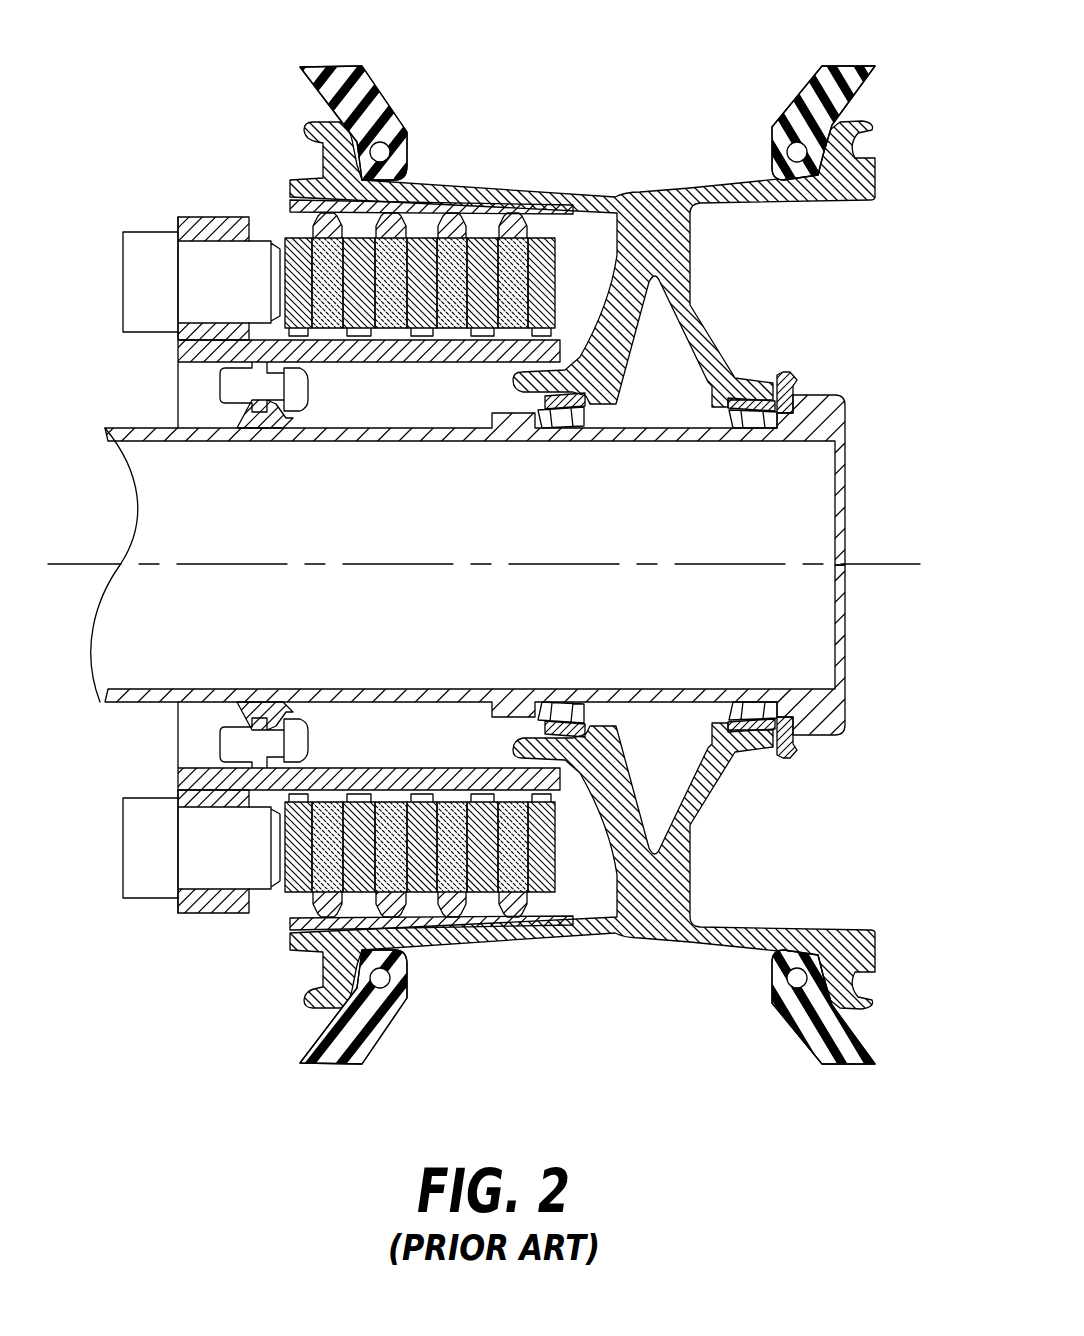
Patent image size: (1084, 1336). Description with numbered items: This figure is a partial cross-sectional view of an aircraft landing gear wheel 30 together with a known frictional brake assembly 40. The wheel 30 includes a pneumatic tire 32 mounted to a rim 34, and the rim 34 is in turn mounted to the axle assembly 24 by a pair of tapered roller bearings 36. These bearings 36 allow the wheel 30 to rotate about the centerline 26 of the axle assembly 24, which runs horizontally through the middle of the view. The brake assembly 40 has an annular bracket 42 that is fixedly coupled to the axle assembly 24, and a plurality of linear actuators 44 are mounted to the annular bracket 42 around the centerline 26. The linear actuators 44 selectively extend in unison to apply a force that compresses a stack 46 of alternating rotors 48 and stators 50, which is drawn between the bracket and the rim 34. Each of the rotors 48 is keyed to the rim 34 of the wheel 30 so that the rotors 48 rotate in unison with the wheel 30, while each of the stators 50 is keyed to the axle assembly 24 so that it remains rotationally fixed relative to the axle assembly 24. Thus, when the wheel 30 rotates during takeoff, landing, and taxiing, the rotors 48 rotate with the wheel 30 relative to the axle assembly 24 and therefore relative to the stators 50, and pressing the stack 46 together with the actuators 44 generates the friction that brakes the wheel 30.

The axle assembly 24 is at (130, 702).
The centerline 26 is at (875, 564).
The wheel 30 is at (915, 62).
The pneumatic tire 32 is at (866, 93).
The rim 34 is at (712, 322).
The tapered roller bearings 36 is at (787, 387).
The brake assembly 40 is at (123, 206).
The annular bracket 42 is at (187, 345).
The linear actuators 44 is at (203, 263).
The stack 46 is at (268, 228).
The rotors 48 is at (514, 248).
The stators 50 is at (298, 238).